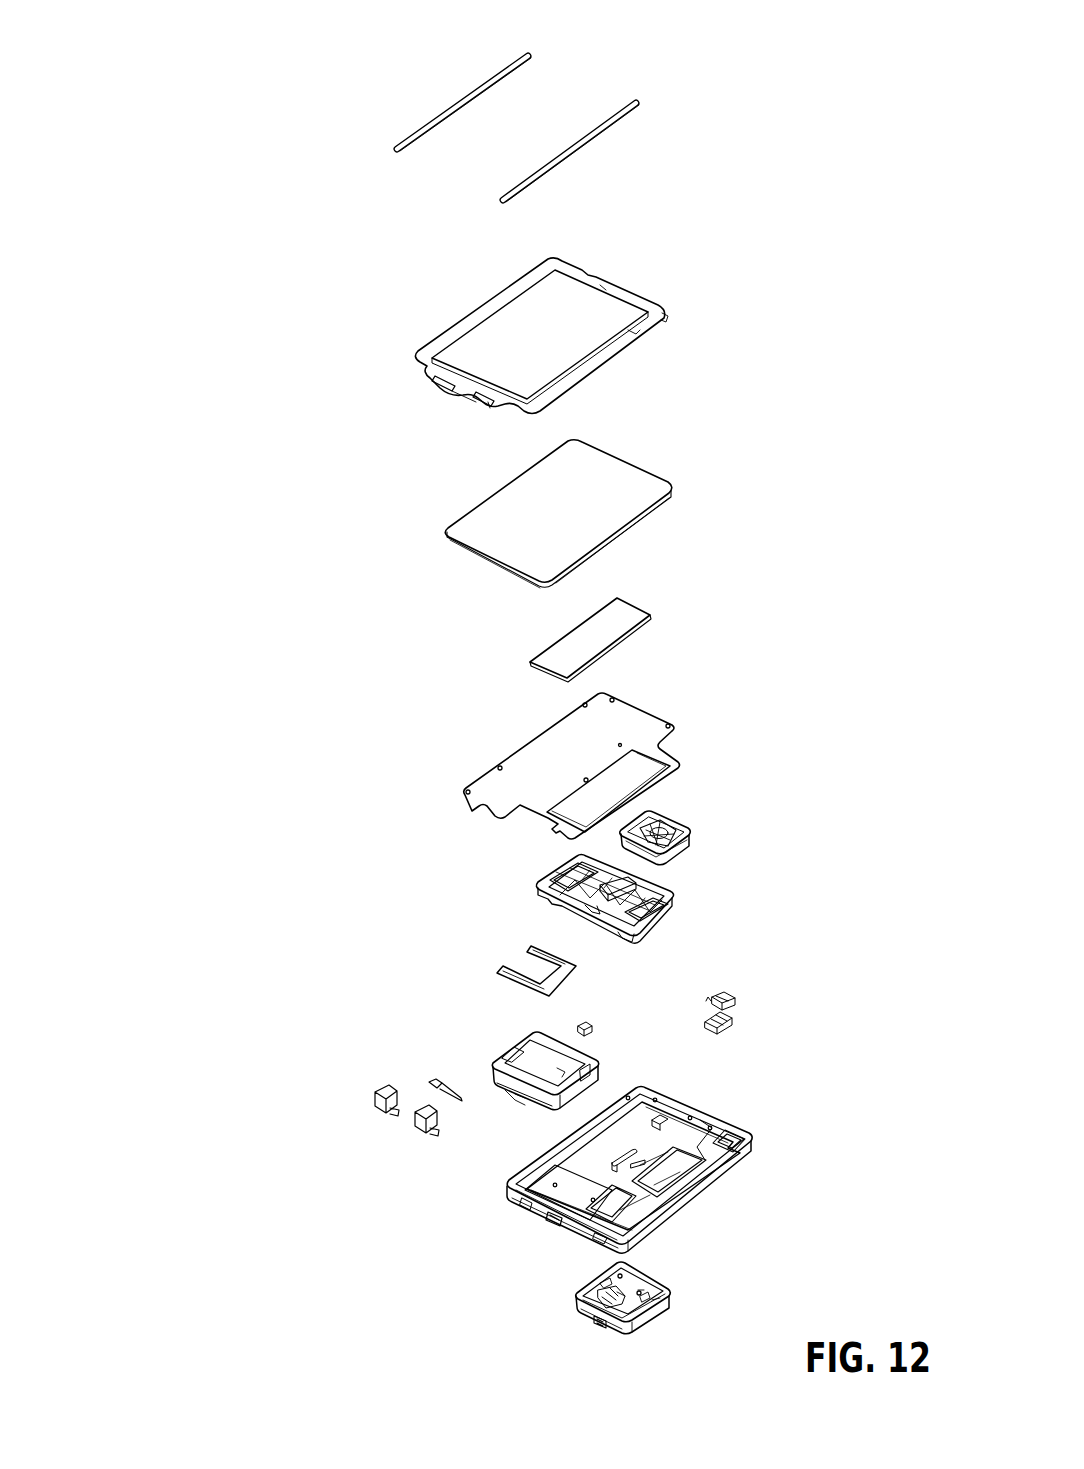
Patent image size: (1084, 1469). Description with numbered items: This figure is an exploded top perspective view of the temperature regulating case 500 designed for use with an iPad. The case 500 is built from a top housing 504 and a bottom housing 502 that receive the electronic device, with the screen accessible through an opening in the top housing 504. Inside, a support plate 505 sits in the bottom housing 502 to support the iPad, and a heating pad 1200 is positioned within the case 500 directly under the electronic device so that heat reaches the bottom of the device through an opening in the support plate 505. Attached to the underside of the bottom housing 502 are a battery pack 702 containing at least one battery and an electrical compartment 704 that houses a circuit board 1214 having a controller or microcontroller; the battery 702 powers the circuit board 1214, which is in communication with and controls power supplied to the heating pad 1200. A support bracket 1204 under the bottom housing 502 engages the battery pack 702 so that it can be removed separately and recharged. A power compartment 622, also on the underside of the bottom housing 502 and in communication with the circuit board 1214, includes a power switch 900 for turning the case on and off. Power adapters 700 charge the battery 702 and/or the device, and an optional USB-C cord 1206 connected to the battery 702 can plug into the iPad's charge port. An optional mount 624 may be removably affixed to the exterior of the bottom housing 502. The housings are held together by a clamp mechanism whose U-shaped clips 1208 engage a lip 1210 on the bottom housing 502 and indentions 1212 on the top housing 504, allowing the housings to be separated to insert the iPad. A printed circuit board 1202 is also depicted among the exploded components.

The temperature regulating case 500 is at (210, 213).
The support bracket 1204 is at (440, 108).
The top housing 504 is at (586, 266).
The indentions 1212 is at (482, 402).
The support plate 505 is at (466, 496).
The heating pad 1200 is at (632, 604).
The printed circuit board 1202 is at (511, 740).
The power switch 900 is at (666, 826).
The power compartment 622 is at (691, 824).
The mount 624 is at (541, 905).
The battery pack 702 is at (588, 1044).
The USB-C cord 1206 is at (431, 1083).
The bottom housing 502 is at (706, 1114).
The U-shaped clips 1208 is at (422, 1129).
The lip 1210 is at (556, 1218).
The electrical compartment 704 is at (658, 1275).
The circuit board 1214 is at (604, 1302).
The power adapter 700 is at (600, 1326).